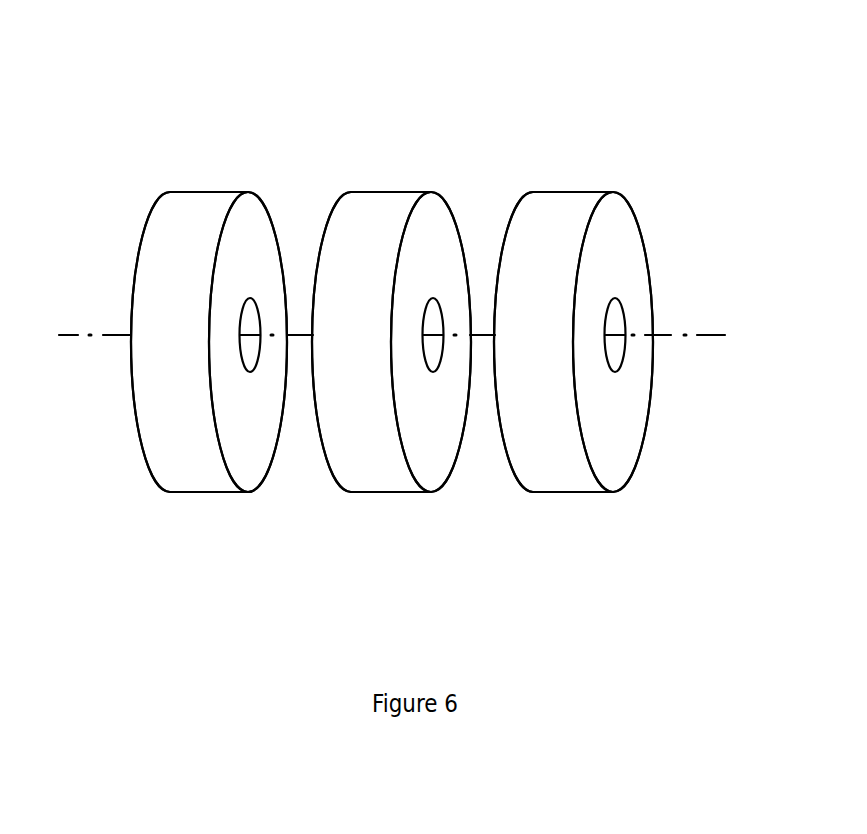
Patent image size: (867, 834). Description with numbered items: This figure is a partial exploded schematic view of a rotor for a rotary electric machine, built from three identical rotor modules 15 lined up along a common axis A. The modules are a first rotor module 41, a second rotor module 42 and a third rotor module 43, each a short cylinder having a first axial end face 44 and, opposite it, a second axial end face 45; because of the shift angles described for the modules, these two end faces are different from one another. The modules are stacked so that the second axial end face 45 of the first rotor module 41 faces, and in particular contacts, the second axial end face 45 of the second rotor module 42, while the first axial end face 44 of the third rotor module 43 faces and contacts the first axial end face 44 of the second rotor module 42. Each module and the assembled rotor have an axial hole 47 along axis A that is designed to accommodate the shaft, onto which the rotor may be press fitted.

The rotor module 15 is at (398, 346).
The first rotor module 41 is at (195, 482).
The second rotor module 42 is at (380, 482).
The third rotor module 43 is at (579, 421).
The first axial end face 44 is at (166, 256).
The second axial end face 45 is at (233, 252).
The axial hole 47 is at (613, 352).
The axis A is at (703, 331).